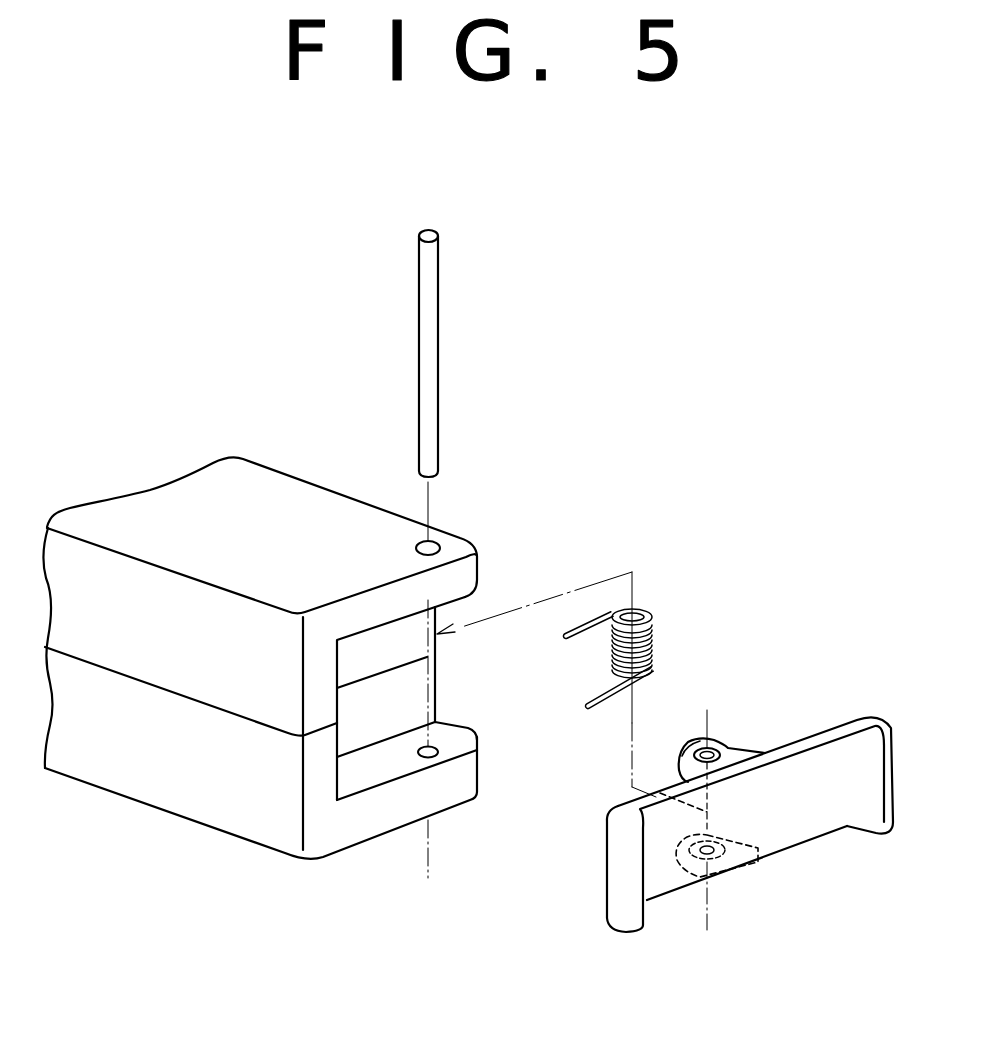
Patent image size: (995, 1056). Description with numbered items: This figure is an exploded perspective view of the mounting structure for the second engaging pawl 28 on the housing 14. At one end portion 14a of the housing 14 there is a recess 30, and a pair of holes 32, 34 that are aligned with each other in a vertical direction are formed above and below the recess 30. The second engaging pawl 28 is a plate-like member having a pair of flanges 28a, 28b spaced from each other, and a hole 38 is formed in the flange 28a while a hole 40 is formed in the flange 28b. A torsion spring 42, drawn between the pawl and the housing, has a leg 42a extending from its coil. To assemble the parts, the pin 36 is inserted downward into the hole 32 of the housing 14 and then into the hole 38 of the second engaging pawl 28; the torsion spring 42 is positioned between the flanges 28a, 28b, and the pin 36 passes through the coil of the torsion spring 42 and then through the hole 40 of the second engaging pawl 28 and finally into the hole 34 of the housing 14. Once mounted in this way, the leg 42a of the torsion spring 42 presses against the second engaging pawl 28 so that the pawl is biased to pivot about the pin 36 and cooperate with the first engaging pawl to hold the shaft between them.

The housing 14 is at (193, 768).
The one end portion of the housing 14a is at (372, 822).
The second engaging pawl 28 is at (820, 817).
The flange 28a is at (730, 743).
The flange 28b is at (683, 870).
The recess 30 is at (392, 647).
The hole 32 is at (416, 546).
The hole 34 is at (436, 752).
The pin 36 is at (425, 305).
The hole 38 is at (698, 741).
The hole 40 is at (733, 868).
The torsion spring 42 is at (652, 624).
The leg of the torsion spring 42a is at (590, 707).